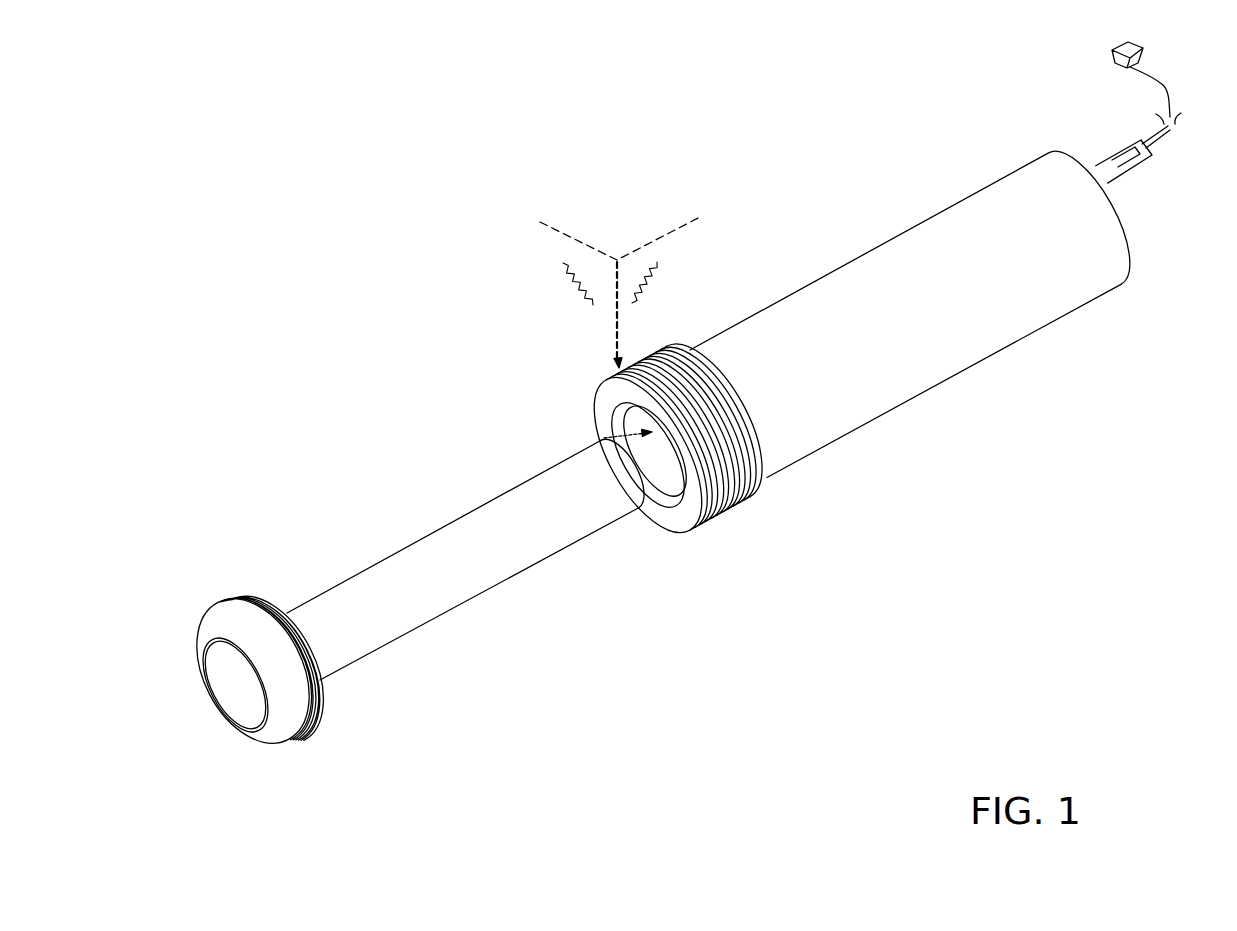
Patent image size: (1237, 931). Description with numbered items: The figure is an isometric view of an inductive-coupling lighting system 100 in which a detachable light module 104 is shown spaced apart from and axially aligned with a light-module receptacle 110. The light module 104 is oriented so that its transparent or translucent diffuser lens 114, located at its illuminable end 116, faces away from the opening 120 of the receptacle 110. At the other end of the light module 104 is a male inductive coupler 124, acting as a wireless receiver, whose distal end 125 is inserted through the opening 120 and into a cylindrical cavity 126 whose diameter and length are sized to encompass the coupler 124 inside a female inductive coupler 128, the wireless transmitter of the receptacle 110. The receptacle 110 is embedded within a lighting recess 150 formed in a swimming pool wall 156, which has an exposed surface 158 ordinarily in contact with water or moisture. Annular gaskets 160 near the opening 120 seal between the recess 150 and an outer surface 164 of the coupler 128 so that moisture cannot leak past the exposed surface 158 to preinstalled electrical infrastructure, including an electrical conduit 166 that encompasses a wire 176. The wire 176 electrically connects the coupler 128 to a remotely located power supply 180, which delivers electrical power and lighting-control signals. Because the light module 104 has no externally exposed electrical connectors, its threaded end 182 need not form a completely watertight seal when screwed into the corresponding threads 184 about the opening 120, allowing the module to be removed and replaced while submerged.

The inductive-coupling lighting system 100 is at (278, 90).
The detachable light module 104 is at (310, 410).
The light-module receptacle 110 is at (863, 215).
The diffuser lens 114 is at (232, 697).
The illuminable end 116 is at (283, 752).
The opening 120 is at (672, 507).
The male inductive coupler 124 is at (450, 508).
The distal end 125 is at (647, 515).
The cylindrical cavity 126 is at (612, 426).
The female inductive coupler 128 is at (1024, 347).
The lighting recess 150 is at (667, 442).
The swimming pool wall 156 is at (617, 260).
The exposed surface 158 is at (562, 266).
The annular gaskets 160 is at (746, 512).
The outer surface 164 is at (910, 334).
The electrical conduit 166 is at (1132, 173).
The wire 176 is at (1172, 80).
The power supply 180 is at (1110, 55).
The threaded end 182 is at (323, 730).
The threads 184 is at (604, 438).